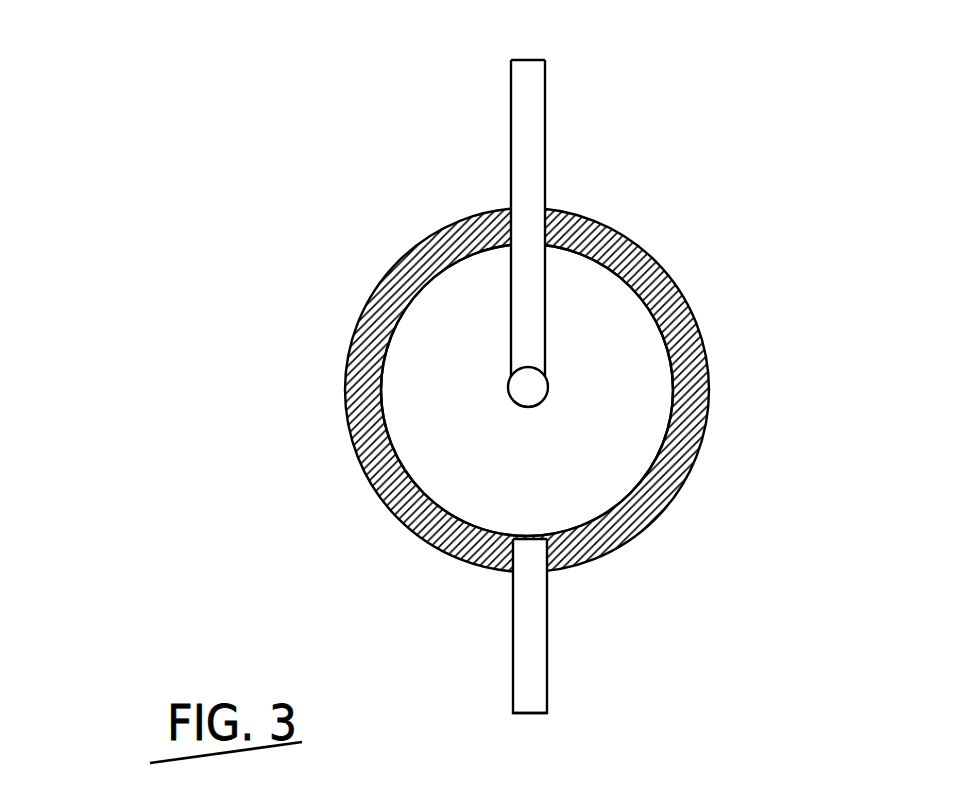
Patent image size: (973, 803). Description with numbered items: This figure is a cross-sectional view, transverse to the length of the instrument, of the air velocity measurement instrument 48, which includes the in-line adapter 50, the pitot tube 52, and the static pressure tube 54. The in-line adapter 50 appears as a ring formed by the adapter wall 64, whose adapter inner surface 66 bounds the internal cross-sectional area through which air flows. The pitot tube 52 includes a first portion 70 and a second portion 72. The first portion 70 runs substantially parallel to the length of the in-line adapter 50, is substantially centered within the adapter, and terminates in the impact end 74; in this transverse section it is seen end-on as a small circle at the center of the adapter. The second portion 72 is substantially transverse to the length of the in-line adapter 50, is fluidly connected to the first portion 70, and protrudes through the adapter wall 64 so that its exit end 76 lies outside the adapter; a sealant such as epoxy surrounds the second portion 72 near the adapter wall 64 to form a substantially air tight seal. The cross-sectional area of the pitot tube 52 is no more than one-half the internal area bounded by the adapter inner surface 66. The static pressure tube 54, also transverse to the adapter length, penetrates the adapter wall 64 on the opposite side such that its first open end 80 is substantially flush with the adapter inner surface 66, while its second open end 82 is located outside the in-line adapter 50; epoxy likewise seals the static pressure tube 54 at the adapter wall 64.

The air velocity measurement instrument 48 is at (644, 392).
The in-line adapter 50 is at (574, 387).
The pitot tube 52 is at (553, 198).
The static pressure tube 54 is at (575, 623).
The adapter wall 64 is at (574, 390).
The adapter inner surface 66 is at (397, 432).
The first portion 70 is at (556, 414).
The second portion 72 is at (511, 145).
The impact end 74 is at (526, 398).
The exit end 76 is at (527, 57).
The first open end 80 is at (530, 540).
The second open end 82 is at (528, 713).